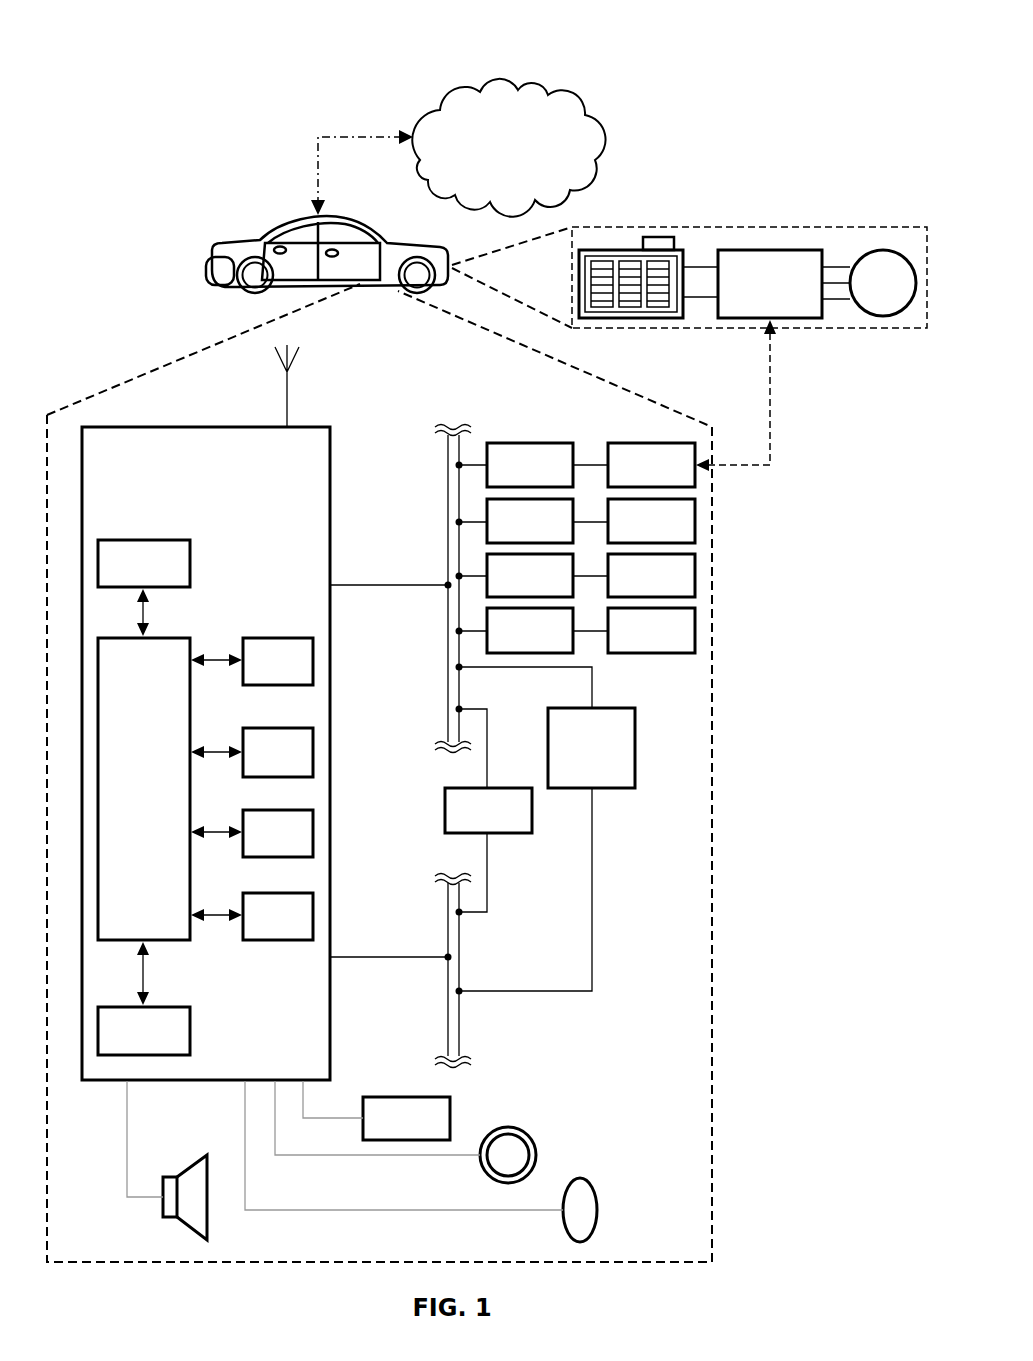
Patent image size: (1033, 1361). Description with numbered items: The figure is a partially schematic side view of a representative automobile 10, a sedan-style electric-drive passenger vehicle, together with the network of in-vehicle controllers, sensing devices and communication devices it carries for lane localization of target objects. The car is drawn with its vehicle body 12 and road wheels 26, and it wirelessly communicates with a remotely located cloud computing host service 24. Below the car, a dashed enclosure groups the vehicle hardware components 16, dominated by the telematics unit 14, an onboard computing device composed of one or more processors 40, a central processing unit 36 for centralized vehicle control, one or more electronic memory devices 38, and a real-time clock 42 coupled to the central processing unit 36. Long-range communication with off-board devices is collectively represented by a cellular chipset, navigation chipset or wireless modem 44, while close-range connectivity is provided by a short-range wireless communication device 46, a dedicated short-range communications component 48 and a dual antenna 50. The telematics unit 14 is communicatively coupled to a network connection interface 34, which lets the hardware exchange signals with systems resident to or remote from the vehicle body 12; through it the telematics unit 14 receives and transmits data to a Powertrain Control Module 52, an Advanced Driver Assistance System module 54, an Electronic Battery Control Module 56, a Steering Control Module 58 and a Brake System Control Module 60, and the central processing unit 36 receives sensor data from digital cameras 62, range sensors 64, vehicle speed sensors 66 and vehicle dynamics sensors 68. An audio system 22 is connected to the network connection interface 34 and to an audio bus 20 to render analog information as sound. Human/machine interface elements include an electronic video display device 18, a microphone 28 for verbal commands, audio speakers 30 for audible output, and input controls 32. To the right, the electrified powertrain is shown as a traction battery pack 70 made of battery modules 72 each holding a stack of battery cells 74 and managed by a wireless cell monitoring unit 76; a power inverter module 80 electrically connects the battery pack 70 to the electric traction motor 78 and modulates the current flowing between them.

The automobile 10 is at (191, 59).
The vehicle body 12 is at (235, 227).
The telematics unit 14 is at (332, 616).
The vehicle hardware components 16 is at (188, 348).
The electronic video display device 18 is at (376, 1110).
The audio bus 20 is at (448, 1000).
The audio system 22 is at (547, 829).
The cloud computing host service 24 is at (458, 148).
The road wheels 26 is at (240, 283).
The microphone 28 is at (597, 1187).
The audio speakers 30 is at (185, 1228).
The input controls 32 is at (537, 1145).
The network connection interface 34 is at (448, 655).
The central processing unit 36 is at (144, 821).
The electronic memory devices 38 is at (144, 1031).
The processors 40 is at (144, 588).
The real-time clock 42 is at (252, 661).
The long-range communication components 44 is at (252, 752).
The short-range wireless communication device 46 is at (252, 833).
The dedicated short-range communications component 48 is at (252, 916).
The dual antenna 50 is at (290, 405).
The Powertrain Control Module 52 is at (547, 465).
The Advanced Driver Assistance System module 54 is at (692, 403).
The Electronic Battery Control Module 56 is at (488, 810).
The Steering Control Module 58 is at (547, 521).
The Brake System Control Module 60 is at (651, 521).
The digital cameras 62 is at (547, 575).
The range sensors 64 is at (651, 575).
The vehicle speed sensors 66 is at (547, 630).
The vehicle dynamics sensors 68 is at (651, 630).
The traction battery pack 70 is at (660, 318).
The battery modules 72 is at (600, 259).
The battery cells 74 is at (584, 270).
The cell monitoring unit 76 is at (657, 237).
The electric traction motor 78 is at (875, 250).
The power inverter module 80 is at (735, 250).